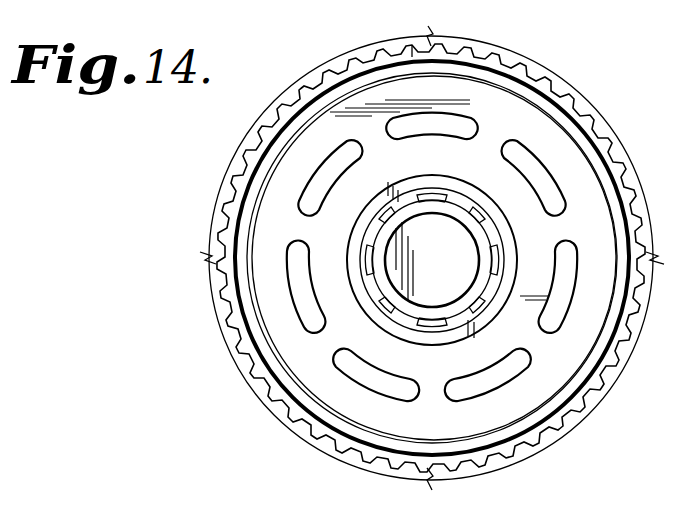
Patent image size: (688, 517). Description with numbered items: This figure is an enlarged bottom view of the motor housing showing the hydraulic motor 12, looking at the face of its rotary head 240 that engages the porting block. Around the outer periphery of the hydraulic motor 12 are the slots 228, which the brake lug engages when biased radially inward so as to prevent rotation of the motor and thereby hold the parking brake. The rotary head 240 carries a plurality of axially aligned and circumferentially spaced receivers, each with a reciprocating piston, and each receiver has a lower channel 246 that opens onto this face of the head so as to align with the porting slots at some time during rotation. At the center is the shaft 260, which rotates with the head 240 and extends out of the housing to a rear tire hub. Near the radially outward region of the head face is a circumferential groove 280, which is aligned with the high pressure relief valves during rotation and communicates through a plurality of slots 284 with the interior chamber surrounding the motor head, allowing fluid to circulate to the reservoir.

The hydraulic motor 12 is at (212, 253).
The slots 228 is at (583, 102).
The rotary head 240 is at (462, 47).
The lower bore or channel 246 is at (573, 247).
The shaft 260 is at (455, 216).
The circumferential groove 280 is at (596, 366).
The slots 284 is at (574, 406).